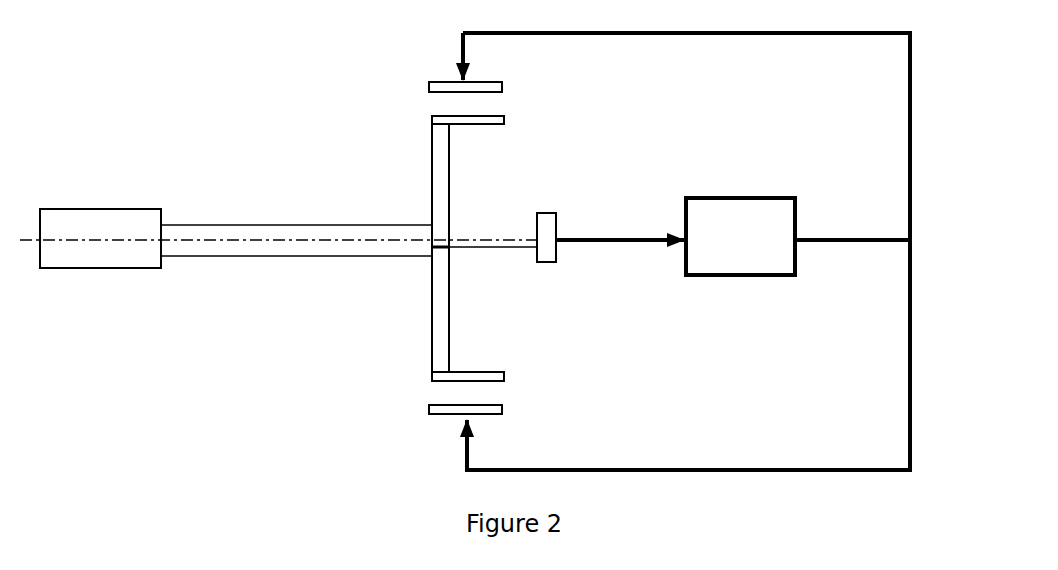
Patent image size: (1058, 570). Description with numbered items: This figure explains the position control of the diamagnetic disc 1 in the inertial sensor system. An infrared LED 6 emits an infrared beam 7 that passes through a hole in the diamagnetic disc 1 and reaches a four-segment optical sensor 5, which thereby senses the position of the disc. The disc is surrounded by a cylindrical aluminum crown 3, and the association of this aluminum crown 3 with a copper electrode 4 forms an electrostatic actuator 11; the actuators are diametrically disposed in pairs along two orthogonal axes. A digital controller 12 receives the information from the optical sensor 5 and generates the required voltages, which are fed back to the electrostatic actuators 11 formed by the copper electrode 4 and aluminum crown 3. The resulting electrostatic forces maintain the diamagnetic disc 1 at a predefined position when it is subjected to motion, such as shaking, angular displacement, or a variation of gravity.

The diamagnetic disc 1 is at (454, 289).
The aluminum crown 3 is at (429, 383).
The copper electrode 4 is at (430, 418).
The optical sensor 5 is at (559, 211).
The infrared LED 6 is at (138, 261).
The infrared beam 7 is at (325, 239).
The electrostatic actuator 11 is at (428, 112).
The controller 12 is at (740, 236).